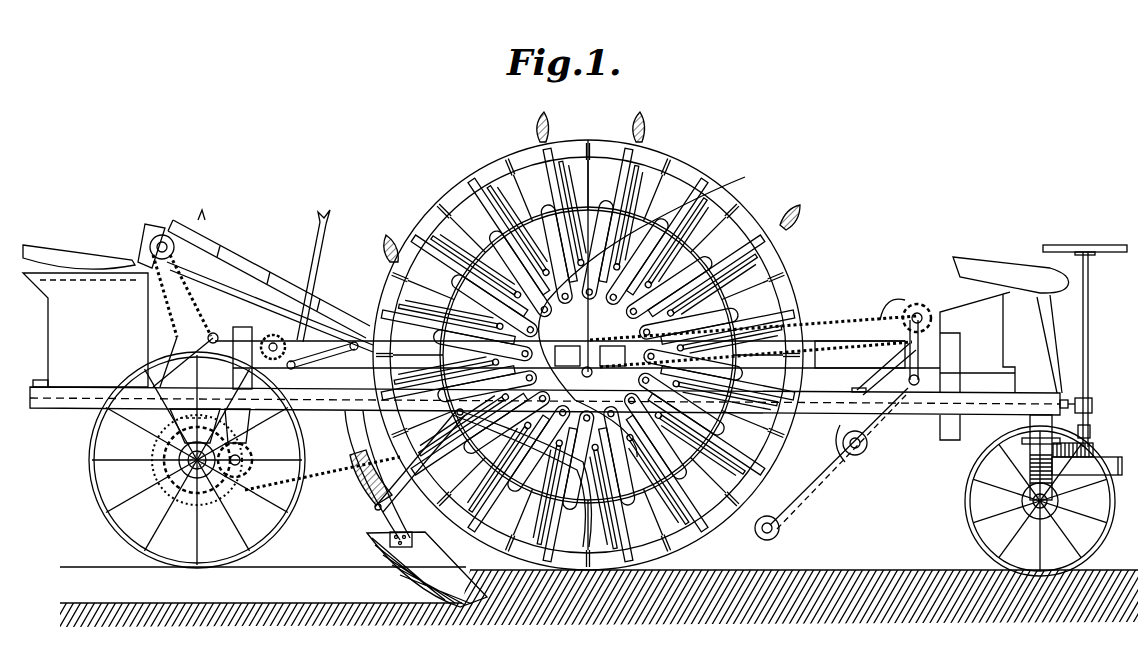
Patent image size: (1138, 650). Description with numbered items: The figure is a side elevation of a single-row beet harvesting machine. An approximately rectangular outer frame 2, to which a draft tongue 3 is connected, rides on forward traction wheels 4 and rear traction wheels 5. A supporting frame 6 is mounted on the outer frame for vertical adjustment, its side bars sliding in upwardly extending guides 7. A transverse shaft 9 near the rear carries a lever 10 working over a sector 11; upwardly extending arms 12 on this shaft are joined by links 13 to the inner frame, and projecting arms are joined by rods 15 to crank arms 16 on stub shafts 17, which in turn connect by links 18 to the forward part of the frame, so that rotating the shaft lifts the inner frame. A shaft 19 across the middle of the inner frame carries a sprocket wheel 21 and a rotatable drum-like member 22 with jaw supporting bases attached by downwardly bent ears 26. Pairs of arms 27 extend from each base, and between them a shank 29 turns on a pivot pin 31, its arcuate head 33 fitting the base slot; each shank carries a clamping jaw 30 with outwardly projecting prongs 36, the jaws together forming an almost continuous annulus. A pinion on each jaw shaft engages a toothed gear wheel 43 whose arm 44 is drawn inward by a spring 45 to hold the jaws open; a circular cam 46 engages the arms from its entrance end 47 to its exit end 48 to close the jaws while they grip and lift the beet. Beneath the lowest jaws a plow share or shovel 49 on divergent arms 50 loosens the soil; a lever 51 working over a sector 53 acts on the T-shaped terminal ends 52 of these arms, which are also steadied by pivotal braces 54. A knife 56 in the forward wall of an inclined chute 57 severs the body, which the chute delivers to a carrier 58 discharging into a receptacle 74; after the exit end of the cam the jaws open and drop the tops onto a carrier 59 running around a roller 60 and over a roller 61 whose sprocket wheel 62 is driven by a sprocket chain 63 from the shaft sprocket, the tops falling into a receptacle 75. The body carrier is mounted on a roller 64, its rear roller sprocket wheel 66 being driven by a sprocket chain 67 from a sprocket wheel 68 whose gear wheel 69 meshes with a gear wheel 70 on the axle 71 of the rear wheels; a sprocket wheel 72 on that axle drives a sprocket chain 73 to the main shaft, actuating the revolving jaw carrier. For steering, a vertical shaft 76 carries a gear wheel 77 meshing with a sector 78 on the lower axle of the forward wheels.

The outer frame 2 is at (78, 400).
The draft tongue 3 is at (1122, 476).
The forward traction wheels 4 is at (967, 512).
The rear traction wheels 5 is at (270, 528).
The supporting frame 6 is at (288, 412).
The guides 7 is at (962, 342).
The shaft 9 is at (150, 420).
The lever 10 is at (215, 252).
The sector 11 is at (160, 352).
The upwardly extending arms 12 is at (259, 368).
The links 13 is at (245, 335).
The links or rods 15 is at (320, 328).
The crank arms 16 is at (890, 325).
The stub shafts 17 is at (855, 382).
The links 18 is at (945, 372).
The shaft 19 is at (586, 359).
The sprocket wheel 21 is at (674, 438).
The drum-like member 22 is at (675, 260).
The downwardly bent ears 26 is at (634, 236).
The arms 27 is at (548, 505).
The shank 29 is at (548, 188).
The clamping jaw 30 is at (478, 172).
The pivot pin 31 is at (652, 306).
The arcuate head 33 is at (480, 308).
The teeth or prongs 36 is at (579, 589).
The toothed gear wheel 43 is at (494, 260).
The arm 44 is at (480, 245).
The spring 45 is at (515, 207).
The cam 46 is at (582, 205).
The entrance end 47 is at (593, 530).
The exit end 48 is at (742, 405).
The plow share or shovel 49 is at (410, 578).
The divergent arms 50 is at (365, 495).
The lever 51 is at (320, 240).
The T-shaped terminal ends 52 is at (346, 398).
The sector 53 is at (275, 335).
The pivotal braces 54 is at (432, 448).
The knife 56 is at (815, 334).
The inclined chute 57 is at (860, 355).
The carrier 58 is at (256, 276).
The carrier 59 is at (832, 494).
The roller 60 is at (778, 538).
The roller 61 is at (898, 310).
The sprocket wheel 62 is at (928, 312).
The sprocket chain 63 is at (840, 314).
The roller 64 is at (878, 456).
The sprocket wheel 66 is at (160, 238).
The sprocket chain 67 is at (195, 282).
The sprocket wheel 68 is at (248, 468).
The gear wheel 69 is at (296, 455).
The gear wheel 70 is at (178, 465).
The axle 71 is at (188, 478).
The sprocket wheel 72 is at (192, 495).
The sprocket chain 73 is at (232, 495).
The receptacle 74 is at (85, 316).
The receptacle 75 is at (996, 320).
The vertical shaft 76 is at (1088, 350).
The gear wheel 77 is at (1088, 445).
The sector 78 is at (1030, 452).